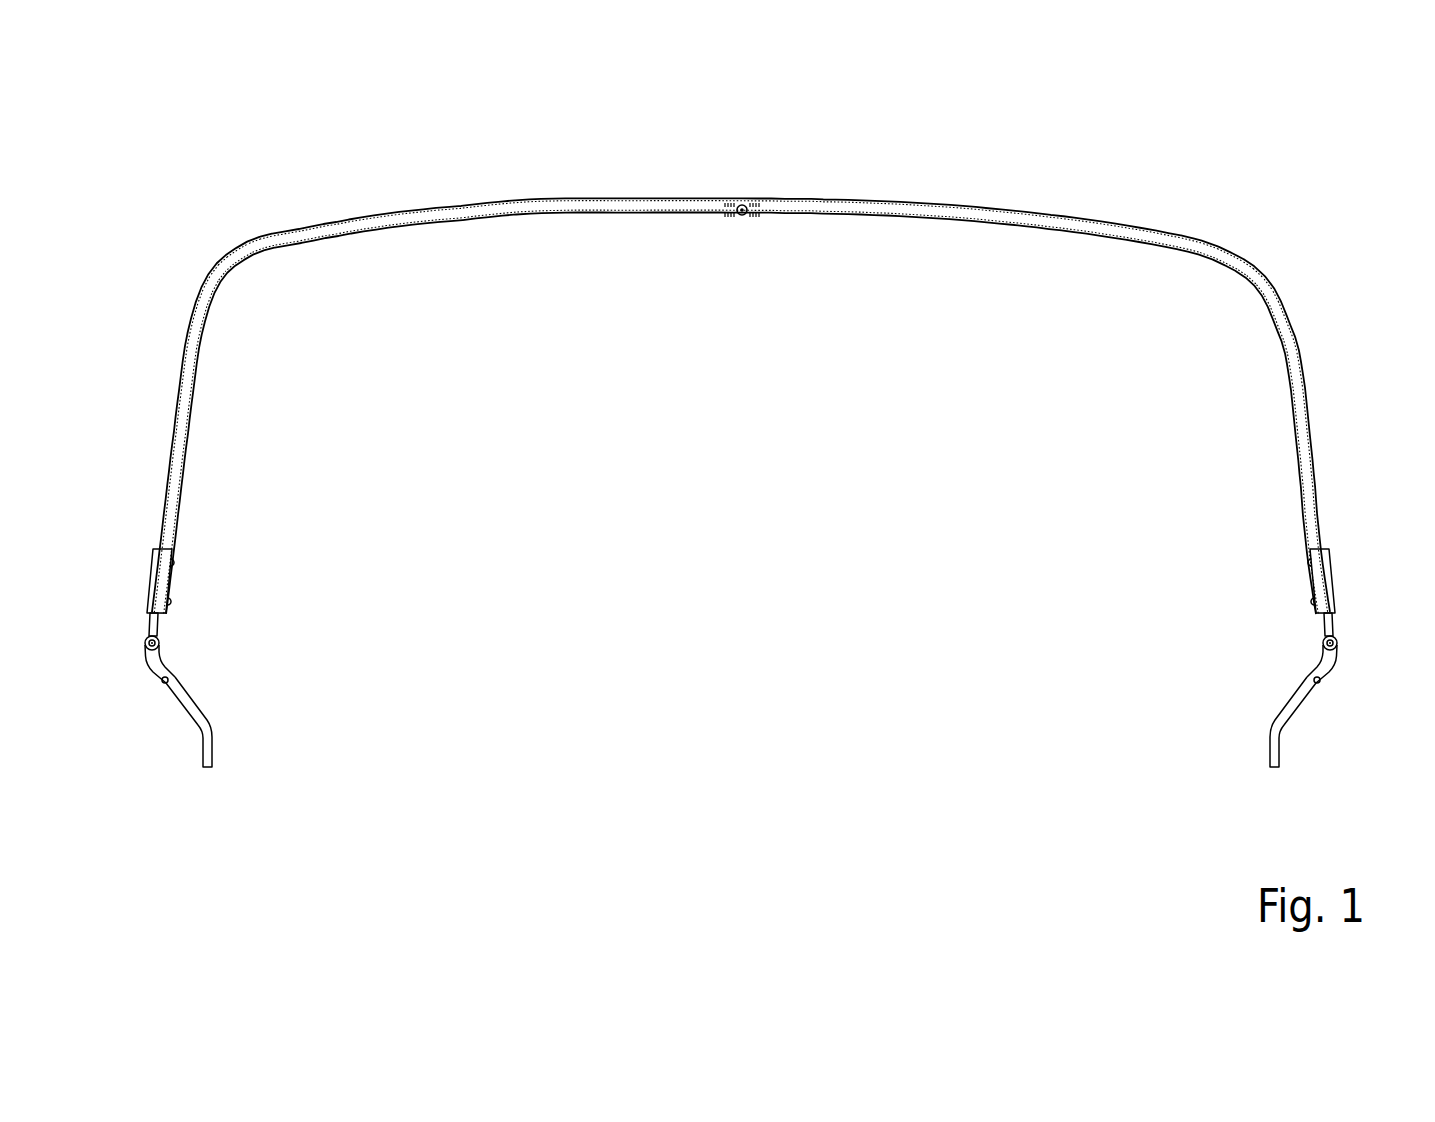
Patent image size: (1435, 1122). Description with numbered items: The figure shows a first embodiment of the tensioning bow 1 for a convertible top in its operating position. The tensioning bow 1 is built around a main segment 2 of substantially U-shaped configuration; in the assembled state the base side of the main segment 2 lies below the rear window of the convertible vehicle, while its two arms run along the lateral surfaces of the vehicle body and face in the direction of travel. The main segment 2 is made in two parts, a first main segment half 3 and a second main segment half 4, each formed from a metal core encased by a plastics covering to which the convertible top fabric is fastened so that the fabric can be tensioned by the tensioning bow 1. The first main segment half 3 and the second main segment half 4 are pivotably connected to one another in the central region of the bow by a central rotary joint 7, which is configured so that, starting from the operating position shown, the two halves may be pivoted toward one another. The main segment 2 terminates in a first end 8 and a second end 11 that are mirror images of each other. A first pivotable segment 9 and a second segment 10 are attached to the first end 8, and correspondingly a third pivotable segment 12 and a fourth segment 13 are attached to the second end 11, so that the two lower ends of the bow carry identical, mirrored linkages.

The tensioning bow 1 is at (1110, 190).
The main segment 2 is at (416, 158).
The first main segment half 3 is at (892, 207).
The second main segment half 4 is at (547, 210).
The central rotary joint 7 is at (742, 214).
The first end 8 is at (1328, 577).
The first pivotable segment 9 is at (1330, 672).
The second segment 10 is at (1290, 728).
The second end 11 is at (157, 580).
The third pivotable segment 12 is at (150, 670).
The fourth segment 13 is at (200, 731).